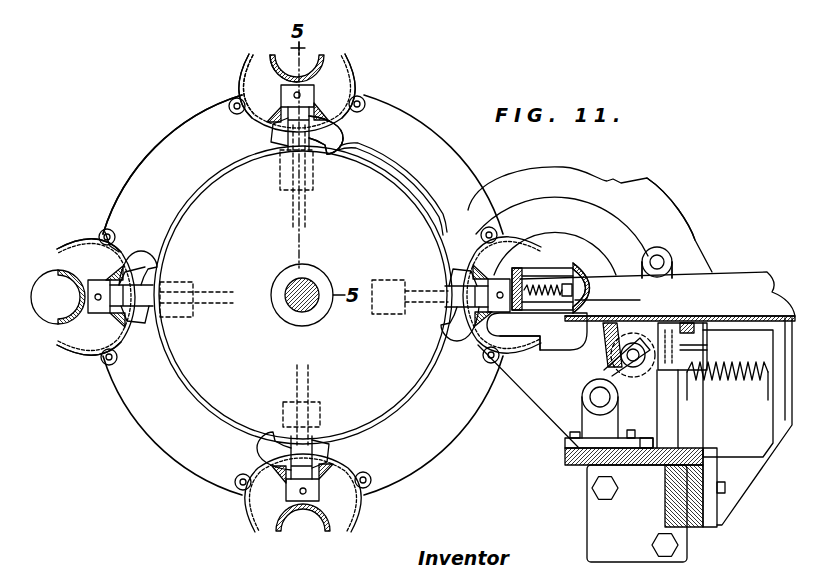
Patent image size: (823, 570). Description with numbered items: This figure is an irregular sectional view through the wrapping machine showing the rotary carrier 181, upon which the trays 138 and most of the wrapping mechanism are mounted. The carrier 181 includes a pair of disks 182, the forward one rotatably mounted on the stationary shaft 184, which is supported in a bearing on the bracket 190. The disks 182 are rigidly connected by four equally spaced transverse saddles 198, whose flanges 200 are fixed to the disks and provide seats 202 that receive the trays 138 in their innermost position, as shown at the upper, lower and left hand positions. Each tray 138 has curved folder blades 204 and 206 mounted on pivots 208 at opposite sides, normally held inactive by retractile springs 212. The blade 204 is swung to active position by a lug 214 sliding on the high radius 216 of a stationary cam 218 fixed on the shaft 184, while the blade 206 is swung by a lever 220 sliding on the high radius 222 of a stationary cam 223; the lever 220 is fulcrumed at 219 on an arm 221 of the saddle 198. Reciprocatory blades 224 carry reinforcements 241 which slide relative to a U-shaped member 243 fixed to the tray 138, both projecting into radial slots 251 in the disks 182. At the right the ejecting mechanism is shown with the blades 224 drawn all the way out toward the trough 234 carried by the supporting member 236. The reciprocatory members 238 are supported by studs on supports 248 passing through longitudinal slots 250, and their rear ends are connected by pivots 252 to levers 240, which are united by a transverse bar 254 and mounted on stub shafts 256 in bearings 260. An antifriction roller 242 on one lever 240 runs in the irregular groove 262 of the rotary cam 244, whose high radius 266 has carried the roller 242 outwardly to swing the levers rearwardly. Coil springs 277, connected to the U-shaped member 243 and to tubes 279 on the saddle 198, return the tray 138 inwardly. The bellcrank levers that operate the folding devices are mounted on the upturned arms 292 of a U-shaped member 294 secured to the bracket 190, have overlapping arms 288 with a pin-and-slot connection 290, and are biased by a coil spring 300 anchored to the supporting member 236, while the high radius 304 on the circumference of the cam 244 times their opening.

The tray 138 is at (280, 63).
The rotary carrier 181 is at (170, 137).
The disks 182 is at (140, 160).
The stationary shaft 184 is at (290, 284).
The bracket 190 is at (575, 465).
The saddle 198 is at (250, 95).
The flange 200 is at (247, 95).
The seat 202 is at (82, 267).
The curved folder blade 204 is at (247, 57).
The curved folder blade 206 is at (357, 60).
The pivot 208 is at (100, 298).
The retractile spring 212 is at (327, 447).
The lug 214 is at (287, 143).
The high radius 216 is at (366, 157).
The stationary cam 218 is at (213, 173).
The fulcrum 219 is at (133, 263).
The lever 220 is at (327, 132).
The arm 221 is at (143, 272).
The high radius 222 is at (400, 170).
The stationary cam 223 is at (190, 198).
The reciprocatory blade 224 is at (70, 313).
The trough 234 is at (750, 276).
The supporting member 236 is at (737, 500).
The reciprocatory member 238 is at (550, 340).
The lever 240 is at (670, 250).
The reinforcement 241 is at (180, 324).
The antifriction roller 242 is at (643, 340).
The U-shaped member 243 is at (80, 327).
The rotary cam 244 is at (573, 160).
The support 248 is at (567, 446).
The longitudinal slot 250 is at (597, 373).
The radial slot 251 is at (375, 305).
The pivot 252 is at (643, 245).
The transverse bar 254 is at (546, 364).
The stub shaft 256 is at (600, 400).
The bearing 260 is at (568, 455).
The irregular groove 262 is at (562, 226).
The high radius 266 is at (644, 384).
The coil spring 277 is at (540, 293).
The tube 279 is at (310, 372).
The overlapping arm 288 is at (690, 335).
The pin-and-slot connection 290 is at (693, 390).
The upturned arm 292 is at (698, 423).
The U-shaped member 294 is at (695, 522).
The coil spring 300 is at (752, 378).
The high radius 304 is at (653, 187).